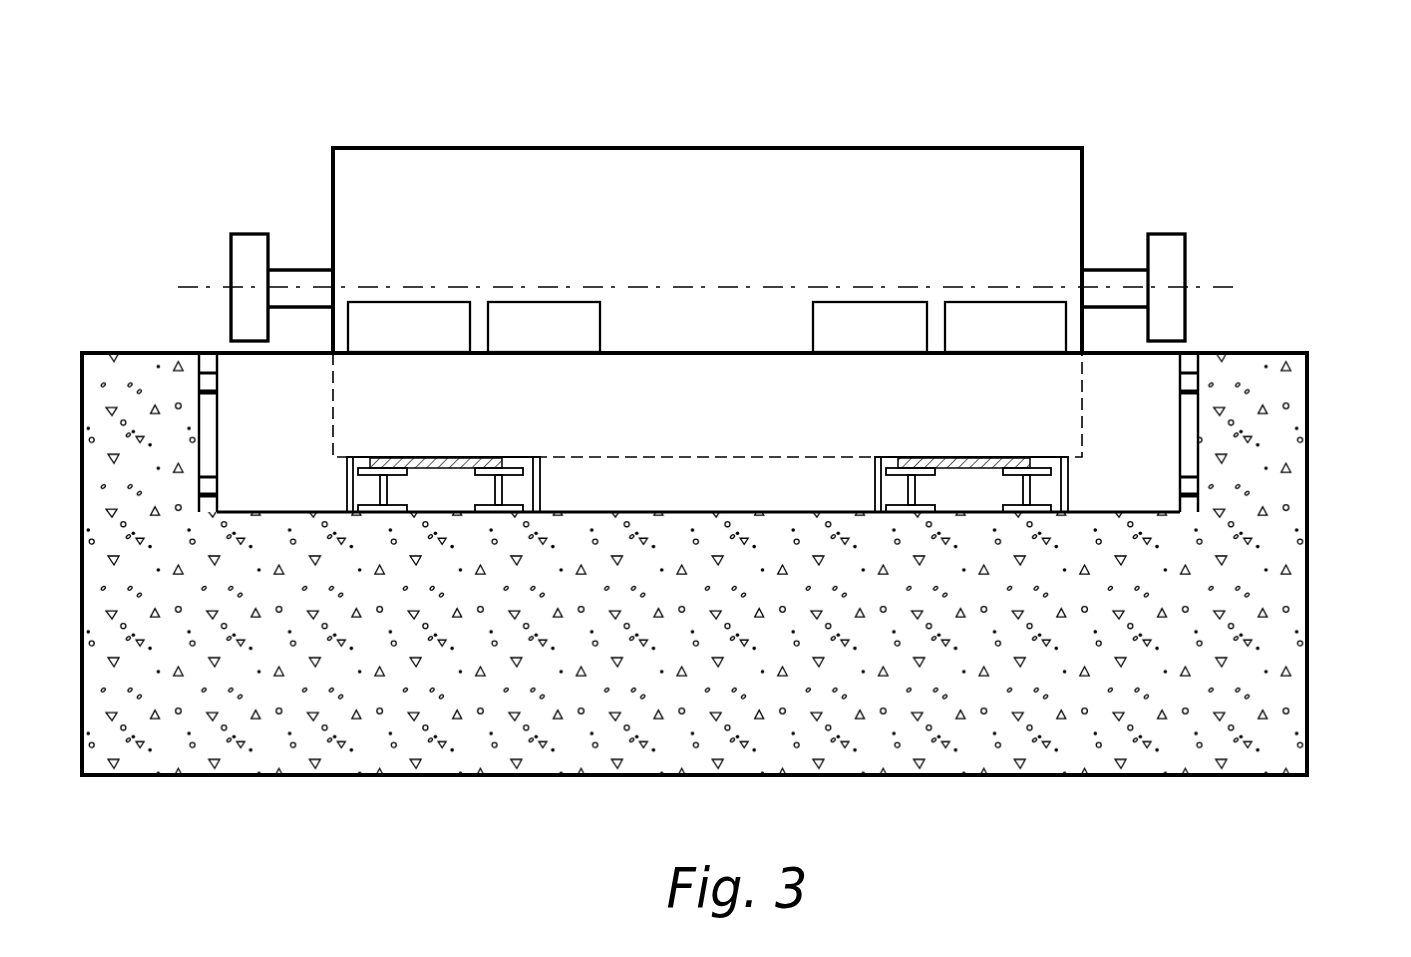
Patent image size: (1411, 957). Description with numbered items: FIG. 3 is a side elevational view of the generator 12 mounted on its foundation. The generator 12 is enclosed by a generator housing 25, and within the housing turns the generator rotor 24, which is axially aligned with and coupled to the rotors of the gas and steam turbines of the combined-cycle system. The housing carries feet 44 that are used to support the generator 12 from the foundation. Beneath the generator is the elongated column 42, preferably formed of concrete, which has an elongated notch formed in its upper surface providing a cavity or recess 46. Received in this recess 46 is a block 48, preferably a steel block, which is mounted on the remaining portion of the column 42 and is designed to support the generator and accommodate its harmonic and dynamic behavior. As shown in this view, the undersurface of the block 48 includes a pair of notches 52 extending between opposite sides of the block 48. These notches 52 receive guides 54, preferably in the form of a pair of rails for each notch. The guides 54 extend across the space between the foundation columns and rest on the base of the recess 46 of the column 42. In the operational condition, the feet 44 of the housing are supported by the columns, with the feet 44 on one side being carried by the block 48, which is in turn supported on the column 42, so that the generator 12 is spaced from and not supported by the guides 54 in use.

The generator 12 is at (548, 185).
The generator housing 25 is at (742, 147).
The feet 44 is at (863, 307).
The generator rotor 24 is at (1120, 268).
The block 48 is at (691, 403).
The recess 46 is at (1198, 408).
The column 42 is at (987, 753).
The notches 52 is at (525, 458).
The guides 54 is at (377, 487).